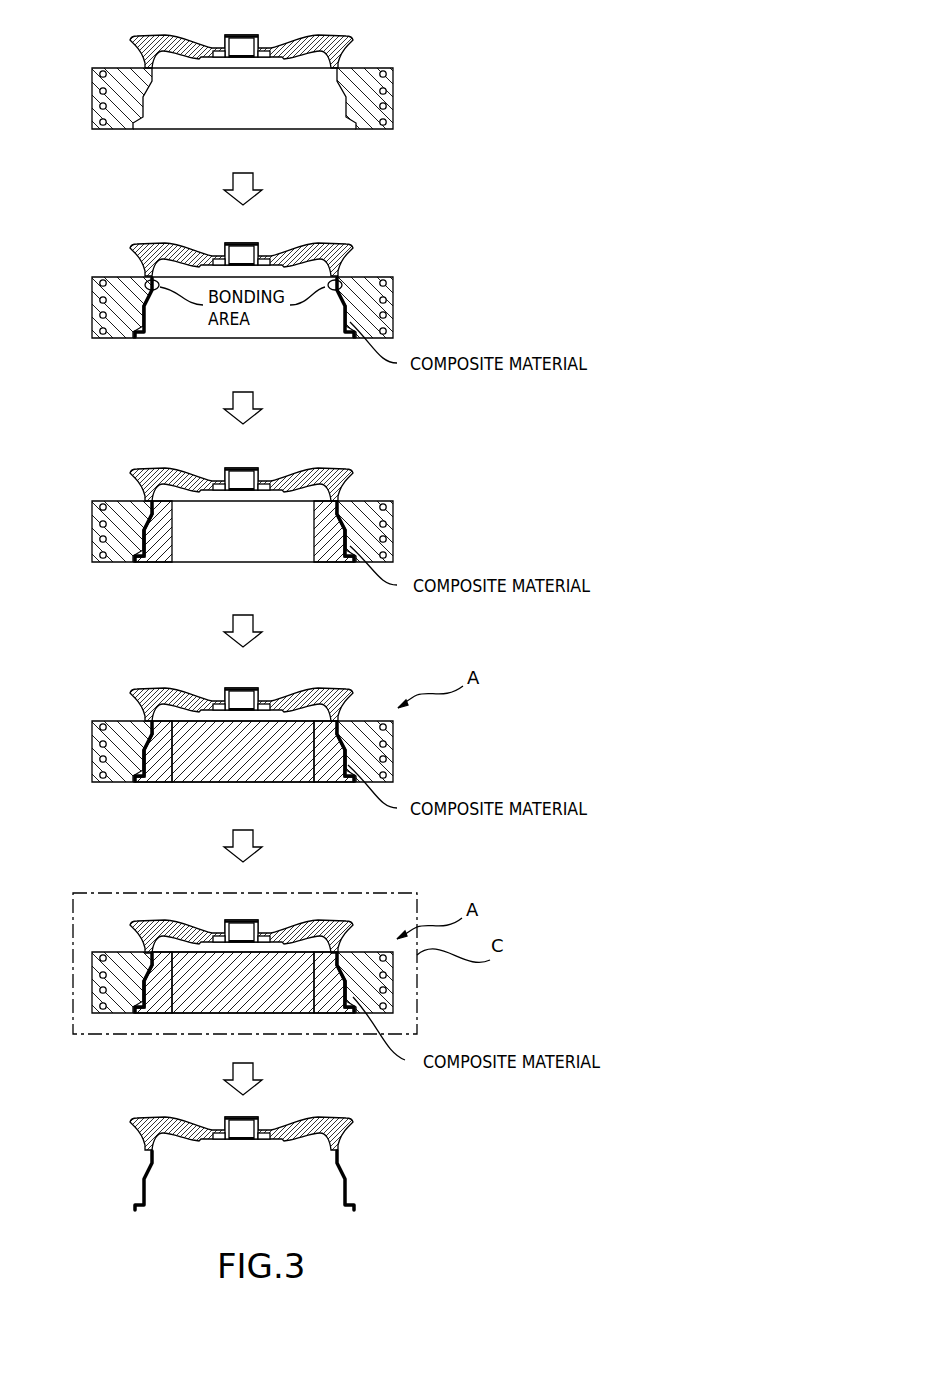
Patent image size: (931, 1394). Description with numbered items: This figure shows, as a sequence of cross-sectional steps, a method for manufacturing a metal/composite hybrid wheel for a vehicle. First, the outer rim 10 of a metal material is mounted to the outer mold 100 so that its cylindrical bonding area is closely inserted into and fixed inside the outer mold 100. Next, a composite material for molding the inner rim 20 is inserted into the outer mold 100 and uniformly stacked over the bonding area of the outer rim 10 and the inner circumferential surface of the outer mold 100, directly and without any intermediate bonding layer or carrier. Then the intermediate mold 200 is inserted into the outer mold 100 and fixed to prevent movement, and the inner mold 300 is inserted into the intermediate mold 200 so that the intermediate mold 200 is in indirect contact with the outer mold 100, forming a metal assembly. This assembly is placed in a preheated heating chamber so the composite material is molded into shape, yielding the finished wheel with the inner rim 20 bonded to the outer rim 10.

The outer rim 10 is at (352, 40).
The outer mold 100 is at (394, 93).
The intermediate mold 200 is at (335, 563).
The inner mold 300 is at (285, 767).
The inner rim 20 is at (350, 1183).